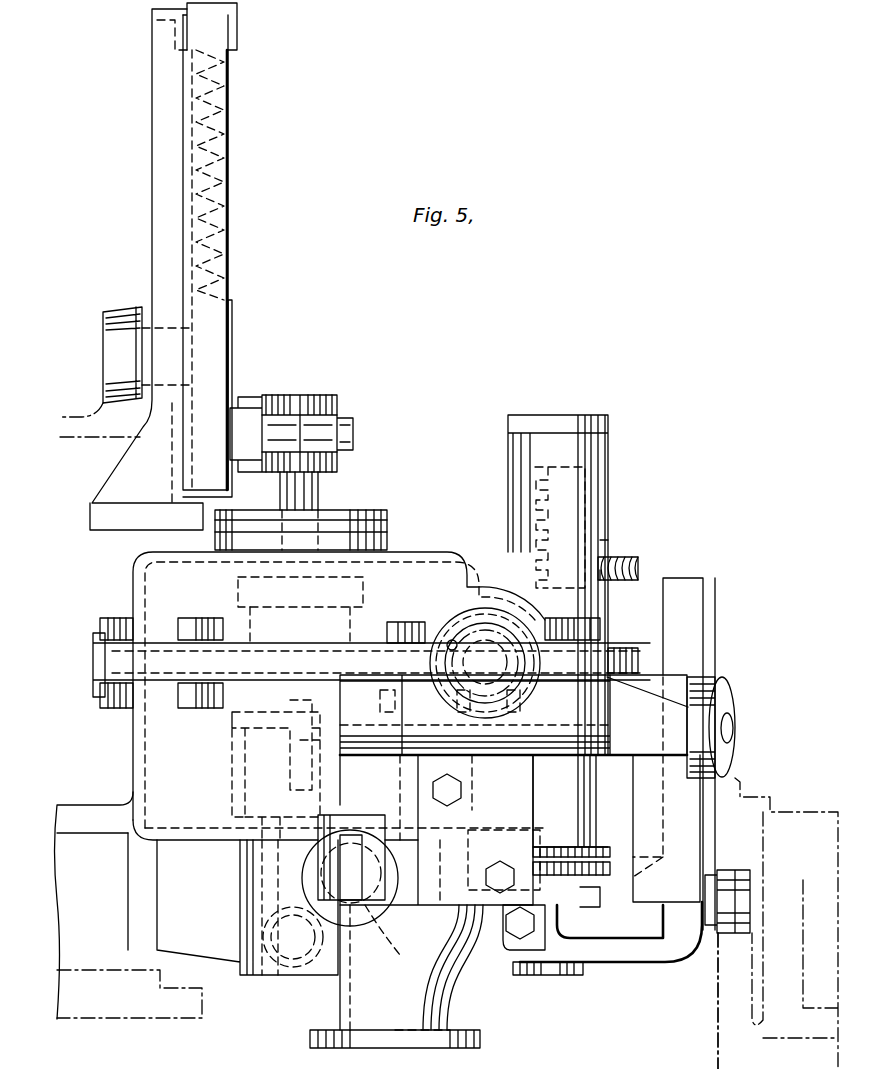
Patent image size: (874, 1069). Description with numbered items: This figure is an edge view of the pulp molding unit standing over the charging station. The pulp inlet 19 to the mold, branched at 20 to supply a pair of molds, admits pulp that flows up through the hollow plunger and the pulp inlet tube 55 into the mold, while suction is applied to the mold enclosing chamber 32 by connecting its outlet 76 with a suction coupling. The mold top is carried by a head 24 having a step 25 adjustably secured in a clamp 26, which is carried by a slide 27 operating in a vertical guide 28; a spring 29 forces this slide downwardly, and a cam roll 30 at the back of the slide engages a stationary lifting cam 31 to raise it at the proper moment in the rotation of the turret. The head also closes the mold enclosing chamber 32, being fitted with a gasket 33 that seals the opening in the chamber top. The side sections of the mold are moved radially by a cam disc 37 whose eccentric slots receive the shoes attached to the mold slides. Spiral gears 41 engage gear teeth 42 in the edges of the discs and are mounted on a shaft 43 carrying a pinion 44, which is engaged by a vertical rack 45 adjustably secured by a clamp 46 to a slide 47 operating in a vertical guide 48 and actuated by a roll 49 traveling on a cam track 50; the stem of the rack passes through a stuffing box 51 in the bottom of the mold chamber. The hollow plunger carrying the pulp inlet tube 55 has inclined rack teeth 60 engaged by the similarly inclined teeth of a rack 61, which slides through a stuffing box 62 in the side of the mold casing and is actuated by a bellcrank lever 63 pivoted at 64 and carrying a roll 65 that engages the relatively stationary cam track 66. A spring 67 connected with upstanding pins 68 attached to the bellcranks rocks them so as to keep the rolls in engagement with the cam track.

The pulp inlet 19 is at (455, 1032).
The branch of the pulp inlet 20 is at (233, 904).
The head 24 is at (345, 510).
The step 25 is at (322, 490).
The clamp 26 is at (338, 411).
The slide 27 is at (230, 380).
The vertical guide 28 is at (228, 250).
The spring 29 is at (215, 168).
The cam roll 30 is at (108, 310).
The stationary lifting cam 31 is at (100, 409).
The mold enclosing chamber 32 is at (420, 552).
The gasket 33 is at (388, 530).
The cam disc 37 is at (262, 650).
The spiral gear 41 is at (450, 642).
The gear teeth 42 is at (458, 668).
The shaft 43 is at (485, 662).
The pinion 44 is at (447, 625).
The vertical rack 45 is at (538, 520).
The clamp 46 is at (556, 965).
The slide 47 is at (680, 908).
The vertical guide 48 is at (666, 828).
The roll 49 is at (735, 870).
The cam track 50 is at (720, 950).
The stuffing box 51 is at (565, 850).
The pulp inlet tube 55 is at (292, 738).
The inclined rack teeth 60 is at (320, 842).
The rack 61 is at (351, 869).
The stuffing box 62 is at (370, 905).
The bellcrank lever 63 is at (514, 776).
The pivot 64 is at (612, 738).
The roll 65 is at (705, 680).
The cam track 66 is at (738, 784).
The spring 67 is at (630, 562).
The upstanding pin 68 is at (608, 545).
The outlet 76 is at (480, 845).